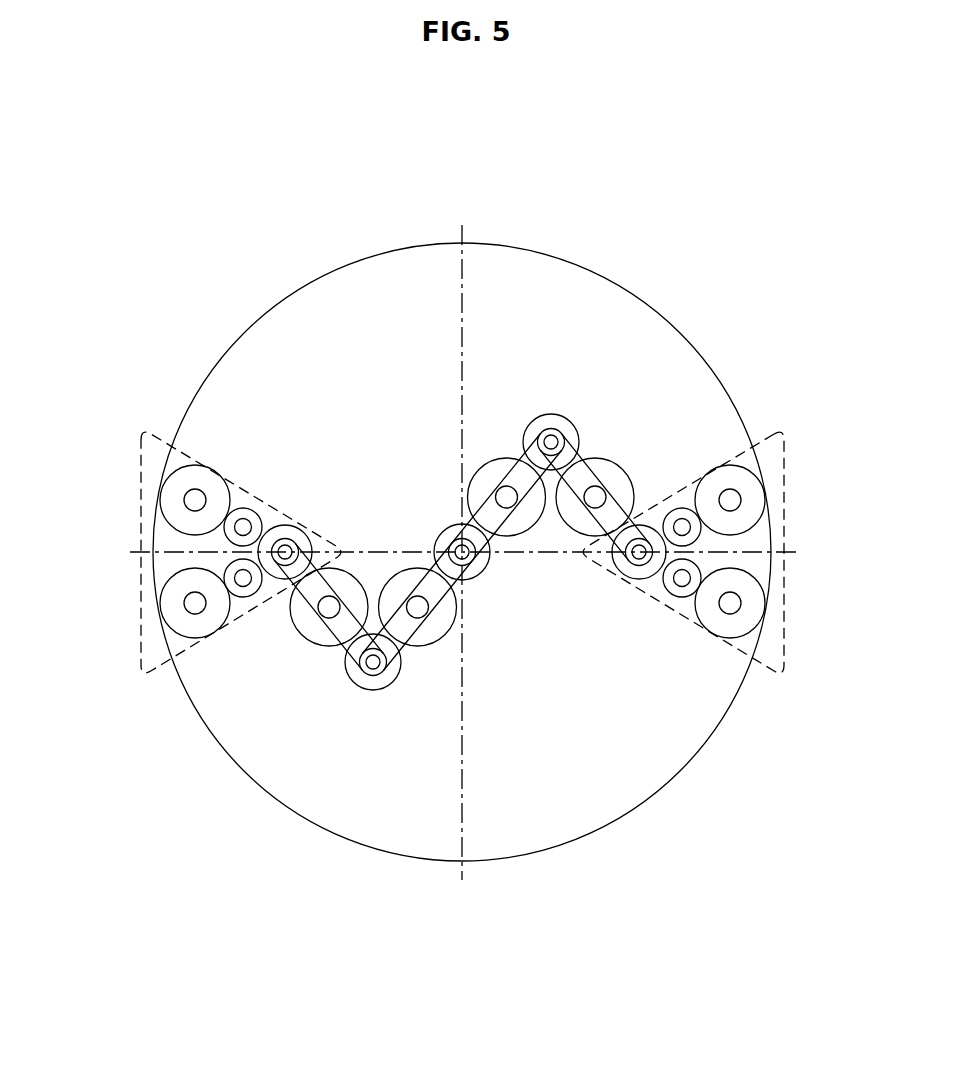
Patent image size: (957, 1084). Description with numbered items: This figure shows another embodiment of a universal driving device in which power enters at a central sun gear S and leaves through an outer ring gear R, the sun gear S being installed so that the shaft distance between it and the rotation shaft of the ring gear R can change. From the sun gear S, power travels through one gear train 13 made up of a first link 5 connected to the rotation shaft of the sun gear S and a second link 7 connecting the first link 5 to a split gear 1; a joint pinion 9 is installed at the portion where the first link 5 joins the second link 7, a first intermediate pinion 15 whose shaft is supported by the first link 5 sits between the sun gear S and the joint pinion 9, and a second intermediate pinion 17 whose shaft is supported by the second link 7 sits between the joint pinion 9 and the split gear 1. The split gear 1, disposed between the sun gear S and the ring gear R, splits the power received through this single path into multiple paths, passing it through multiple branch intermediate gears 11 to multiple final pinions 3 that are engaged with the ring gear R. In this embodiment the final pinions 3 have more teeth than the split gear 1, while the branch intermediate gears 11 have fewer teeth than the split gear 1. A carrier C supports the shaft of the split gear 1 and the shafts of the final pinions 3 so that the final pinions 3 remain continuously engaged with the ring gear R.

The ring gear R is at (400, 248).
The carrier C is at (140, 565).
The sun gear S is at (480, 570).
The split gear 1 is at (287, 524).
The final pinions 3 is at (168, 478).
The first link 5 is at (514, 470).
The second link 7 is at (348, 576).
The joint pinion 9 is at (557, 420).
The branch intermediate gears 11 is at (224, 573).
The gear train 13 is at (686, 222).
The first intermediate pinion 15 is at (542, 497).
The second intermediate pinion 17 is at (625, 487).